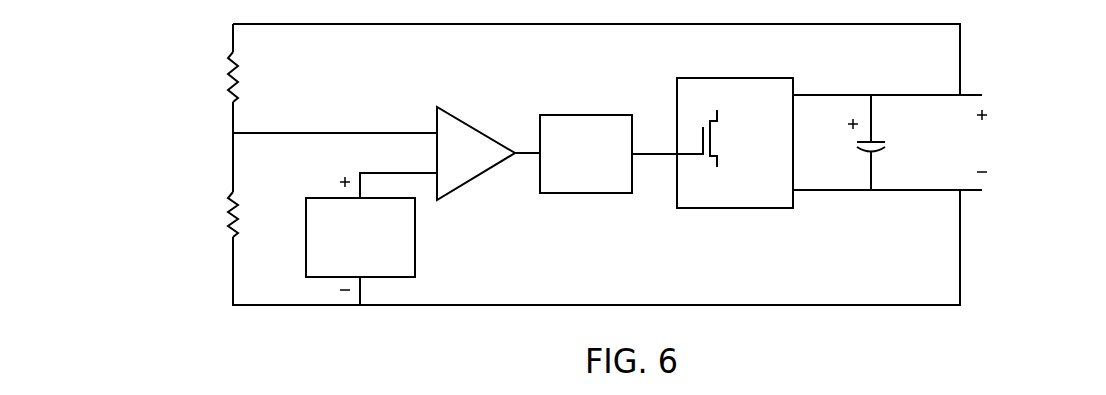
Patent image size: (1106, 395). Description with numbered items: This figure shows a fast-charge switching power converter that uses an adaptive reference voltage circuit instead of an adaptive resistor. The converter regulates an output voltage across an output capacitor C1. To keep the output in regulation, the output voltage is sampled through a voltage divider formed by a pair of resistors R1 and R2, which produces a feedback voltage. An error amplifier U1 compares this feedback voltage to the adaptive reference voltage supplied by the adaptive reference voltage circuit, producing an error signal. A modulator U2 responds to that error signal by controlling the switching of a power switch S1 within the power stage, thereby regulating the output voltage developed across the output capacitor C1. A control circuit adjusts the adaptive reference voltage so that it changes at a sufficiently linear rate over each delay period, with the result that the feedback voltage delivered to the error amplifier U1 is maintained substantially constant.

The resistor R1 is at (251, 77).
The resistor R2 is at (252, 214).
The error amplifier U1 is at (488, 153).
The modulator U2 is at (621, 154).
The power switch S1 is at (725, 138).
The output capacitor C1 is at (884, 142).